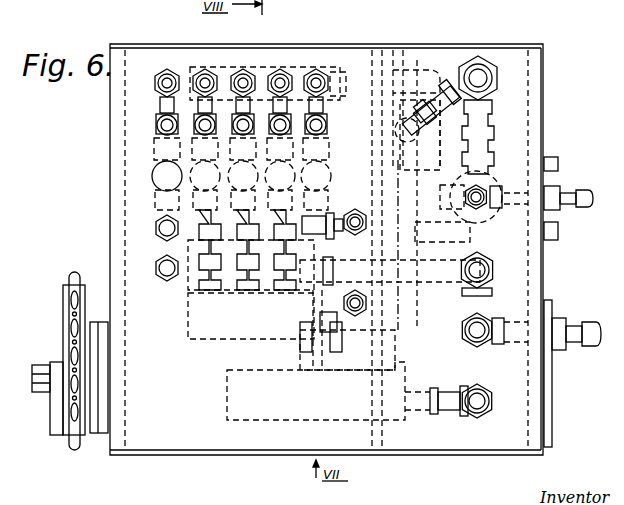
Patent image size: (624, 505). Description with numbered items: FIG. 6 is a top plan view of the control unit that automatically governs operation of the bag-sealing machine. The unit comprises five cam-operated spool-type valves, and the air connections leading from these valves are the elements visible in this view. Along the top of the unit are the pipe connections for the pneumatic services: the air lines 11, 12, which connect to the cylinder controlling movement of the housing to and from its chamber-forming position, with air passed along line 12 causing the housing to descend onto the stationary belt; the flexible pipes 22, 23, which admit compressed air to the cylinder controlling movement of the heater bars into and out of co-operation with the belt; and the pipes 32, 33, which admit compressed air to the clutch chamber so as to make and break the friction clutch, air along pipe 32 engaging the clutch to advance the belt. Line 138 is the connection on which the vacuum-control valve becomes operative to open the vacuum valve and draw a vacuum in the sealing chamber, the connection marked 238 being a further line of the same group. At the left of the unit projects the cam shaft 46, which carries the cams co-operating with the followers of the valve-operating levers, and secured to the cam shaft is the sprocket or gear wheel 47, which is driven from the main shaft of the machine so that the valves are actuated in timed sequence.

The air line 11 is at (252, 73).
The air line 12 is at (266, 88).
The flexible pipe 22 is at (226, 72).
The flexible pipe 23 is at (214, 70).
The pipe 32 is at (328, 122).
The pipe 33 is at (334, 74).
The line 138 is at (304, 78).
The valve 238 is at (332, 172).
The cam shaft 46 is at (93, 322).
The sprocket or gear wheel 47 is at (72, 286).